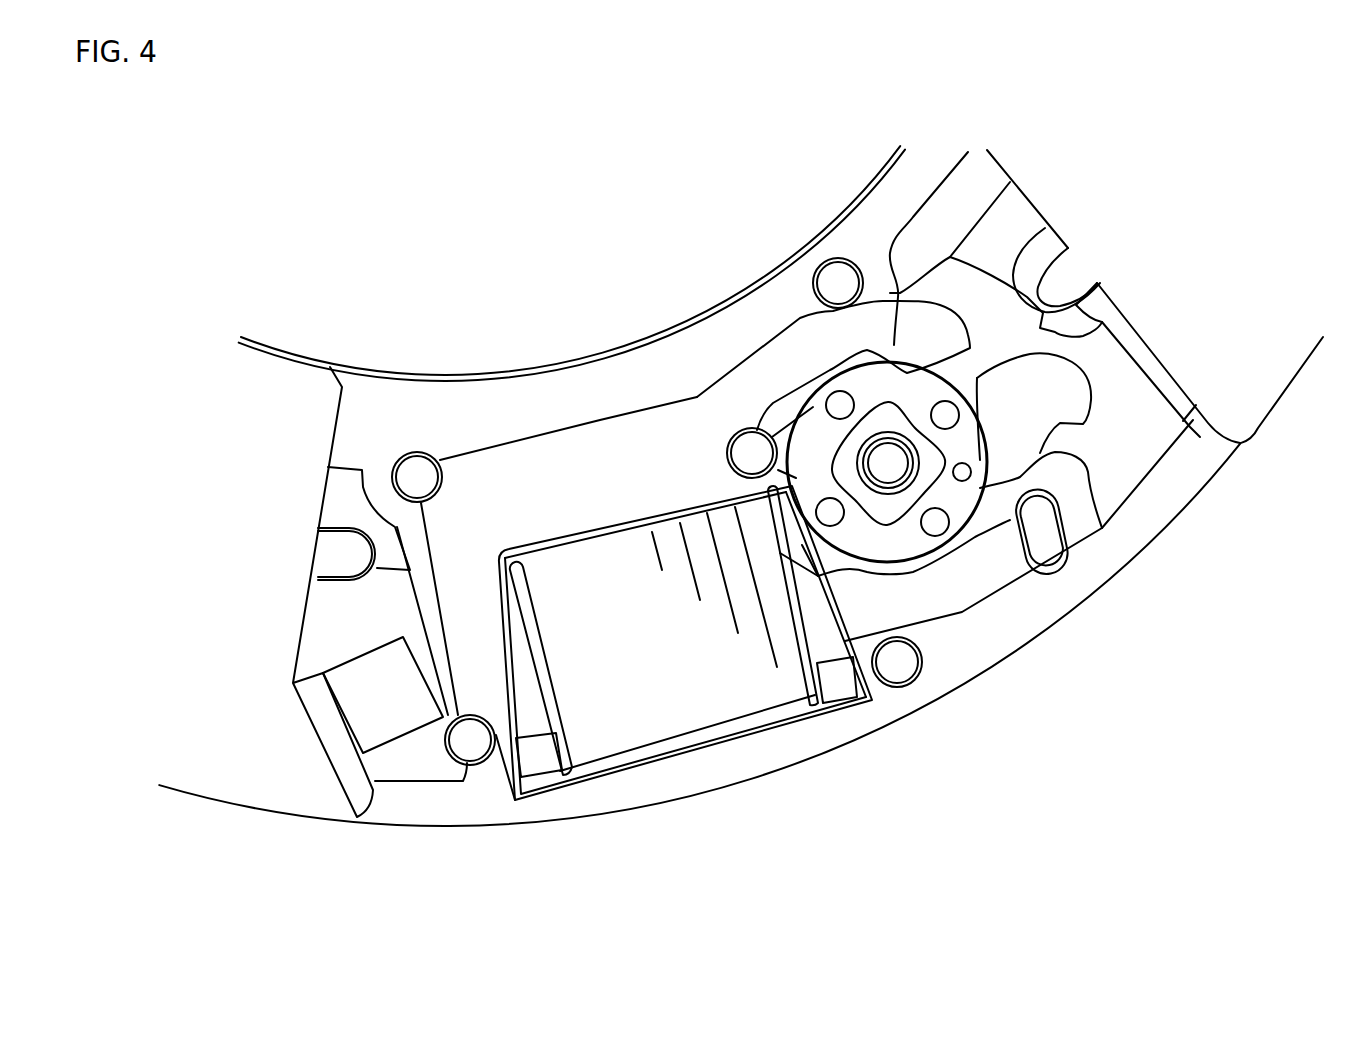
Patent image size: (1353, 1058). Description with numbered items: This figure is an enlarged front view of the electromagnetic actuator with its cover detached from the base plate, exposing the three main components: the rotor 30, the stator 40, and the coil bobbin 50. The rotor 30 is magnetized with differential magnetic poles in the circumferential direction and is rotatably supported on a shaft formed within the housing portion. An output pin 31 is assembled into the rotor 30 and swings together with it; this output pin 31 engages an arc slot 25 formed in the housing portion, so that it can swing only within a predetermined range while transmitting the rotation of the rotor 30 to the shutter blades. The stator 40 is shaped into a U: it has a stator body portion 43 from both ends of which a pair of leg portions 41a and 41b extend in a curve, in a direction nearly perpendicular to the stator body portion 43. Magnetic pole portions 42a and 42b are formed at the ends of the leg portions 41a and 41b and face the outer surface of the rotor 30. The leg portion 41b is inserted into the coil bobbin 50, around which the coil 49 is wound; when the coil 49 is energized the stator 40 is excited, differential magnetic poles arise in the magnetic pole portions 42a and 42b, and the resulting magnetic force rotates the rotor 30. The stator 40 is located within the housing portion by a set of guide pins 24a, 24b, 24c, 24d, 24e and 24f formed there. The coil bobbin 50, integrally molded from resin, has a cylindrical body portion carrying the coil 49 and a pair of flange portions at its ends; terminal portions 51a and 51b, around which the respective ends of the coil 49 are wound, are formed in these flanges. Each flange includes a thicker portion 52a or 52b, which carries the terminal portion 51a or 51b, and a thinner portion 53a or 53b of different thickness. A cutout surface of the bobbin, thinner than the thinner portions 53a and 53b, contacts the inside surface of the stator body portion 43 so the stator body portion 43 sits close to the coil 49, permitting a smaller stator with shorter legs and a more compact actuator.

The guide pin 24a is at (473, 745).
The guide pin 24b is at (415, 470).
The guide pin 24c is at (747, 453).
The guide pin 24d is at (833, 283).
The guide pin 24e is at (1053, 553).
The guide pin 24f is at (897, 660).
The arc slot 25 is at (1057, 325).
The rotor 30 is at (962, 495).
The output pin 31 is at (1060, 422).
The stator 40 is at (562, 428).
The leg portion 41a is at (517, 470).
The leg portion 41b is at (932, 572).
The magnetic pole portion 42a is at (898, 340).
The magnetic pole portion 42b is at (952, 582).
The stator body portion 43 is at (460, 597).
The coil 49 is at (679, 720).
The coil bobbin 50 is at (873, 702).
The terminal portion 51a is at (838, 690).
The terminal portion 51b is at (538, 762).
The thicker portion 52a is at (860, 703).
The thicker portion 52b is at (528, 792).
The thinner portion 53a is at (810, 623).
The thinner portion 53b is at (553, 696).